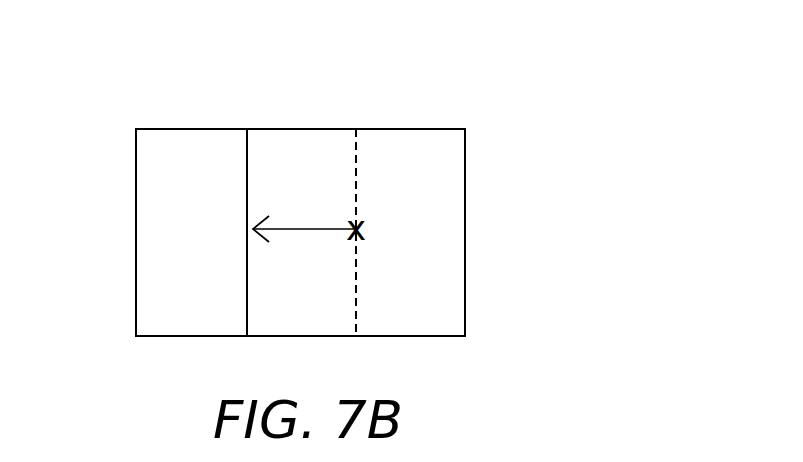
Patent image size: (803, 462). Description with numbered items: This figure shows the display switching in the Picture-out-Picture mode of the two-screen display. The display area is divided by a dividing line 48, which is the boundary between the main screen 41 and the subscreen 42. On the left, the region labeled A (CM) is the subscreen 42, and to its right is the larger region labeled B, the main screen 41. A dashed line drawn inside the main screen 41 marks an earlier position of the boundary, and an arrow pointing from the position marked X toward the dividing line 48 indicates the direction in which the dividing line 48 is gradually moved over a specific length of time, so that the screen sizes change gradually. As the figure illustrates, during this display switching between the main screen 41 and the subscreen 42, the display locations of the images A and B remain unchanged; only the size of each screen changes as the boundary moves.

The main screen 41 is at (443, 146).
The subscreen 42 is at (149, 149).
The dividing line 48 is at (249, 149).